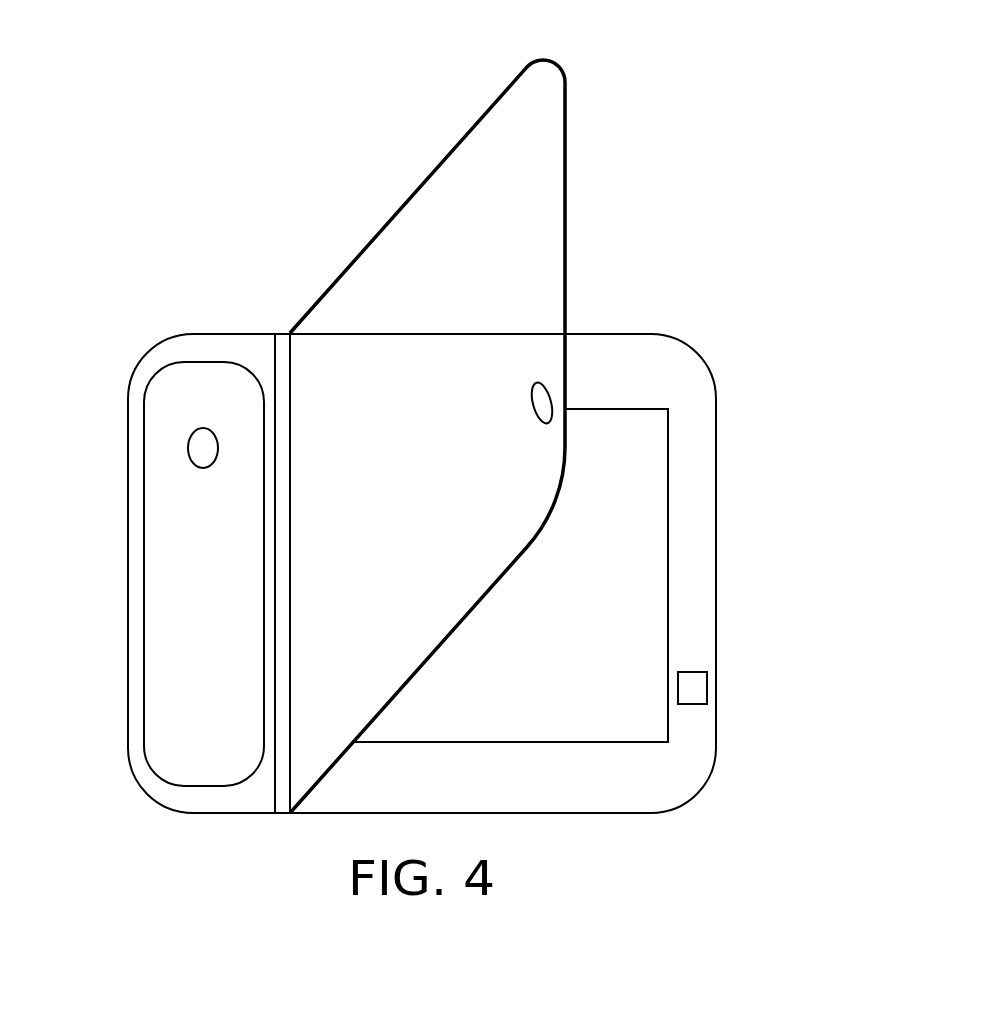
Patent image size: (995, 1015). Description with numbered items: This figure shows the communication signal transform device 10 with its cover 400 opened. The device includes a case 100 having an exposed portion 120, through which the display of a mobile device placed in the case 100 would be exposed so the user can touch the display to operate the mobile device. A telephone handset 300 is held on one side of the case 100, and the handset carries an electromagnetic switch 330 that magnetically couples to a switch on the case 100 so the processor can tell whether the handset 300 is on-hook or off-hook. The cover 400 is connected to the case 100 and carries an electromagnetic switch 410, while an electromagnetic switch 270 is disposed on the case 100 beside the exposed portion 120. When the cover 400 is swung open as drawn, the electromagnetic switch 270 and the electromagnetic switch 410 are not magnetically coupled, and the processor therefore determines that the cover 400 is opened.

The communication signal transform device 10 is at (449, 442).
The case 100 is at (430, 564).
The exposed portion 120 is at (578, 575).
The electromagnetic switch 270 is at (693, 690).
The telephone handset 300 is at (162, 574).
The electromagnetic switch 330 is at (202, 445).
The cover 400 is at (469, 436).
The electromagnetic switch 410 is at (540, 392).